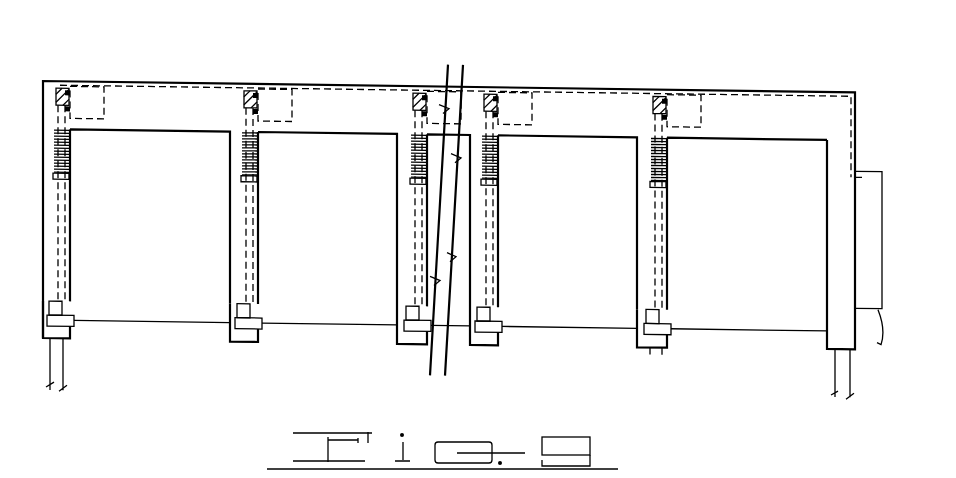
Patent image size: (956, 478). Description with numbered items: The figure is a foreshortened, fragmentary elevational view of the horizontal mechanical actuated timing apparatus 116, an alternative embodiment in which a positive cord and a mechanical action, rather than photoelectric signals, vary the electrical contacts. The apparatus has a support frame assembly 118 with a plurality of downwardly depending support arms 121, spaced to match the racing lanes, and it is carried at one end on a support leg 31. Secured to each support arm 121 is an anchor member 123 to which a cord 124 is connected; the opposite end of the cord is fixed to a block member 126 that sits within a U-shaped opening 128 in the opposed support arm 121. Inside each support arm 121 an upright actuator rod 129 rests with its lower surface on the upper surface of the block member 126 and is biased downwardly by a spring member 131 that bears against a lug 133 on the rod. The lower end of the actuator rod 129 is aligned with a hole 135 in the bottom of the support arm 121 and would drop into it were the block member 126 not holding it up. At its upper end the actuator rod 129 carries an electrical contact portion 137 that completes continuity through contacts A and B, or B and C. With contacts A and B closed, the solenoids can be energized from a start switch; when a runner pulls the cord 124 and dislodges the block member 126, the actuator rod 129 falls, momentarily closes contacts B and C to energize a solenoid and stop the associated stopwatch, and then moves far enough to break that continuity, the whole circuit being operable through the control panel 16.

The control panel 16 is at (863, 227).
The support leg 31 is at (837, 355).
The horizontal mechanical actuated timing apparatus 116 is at (430, 66).
The support frame assembly 118 is at (835, 155).
The support arm 121 is at (258, 230).
The anchor member 123 is at (227, 324).
The cord 124 is at (151, 319).
The block member 126 is at (75, 321).
The U-shaped opening 128 is at (68, 301).
The actuator rod 129 is at (60, 203).
The spring member 131 is at (71, 158).
The lug 133 is at (255, 180).
The hole 135 is at (62, 352).
The electrical contact portion 137 is at (37, 82).
The contact A is at (69, 93).
The contact B is at (71, 100).
The contact C is at (71, 112).